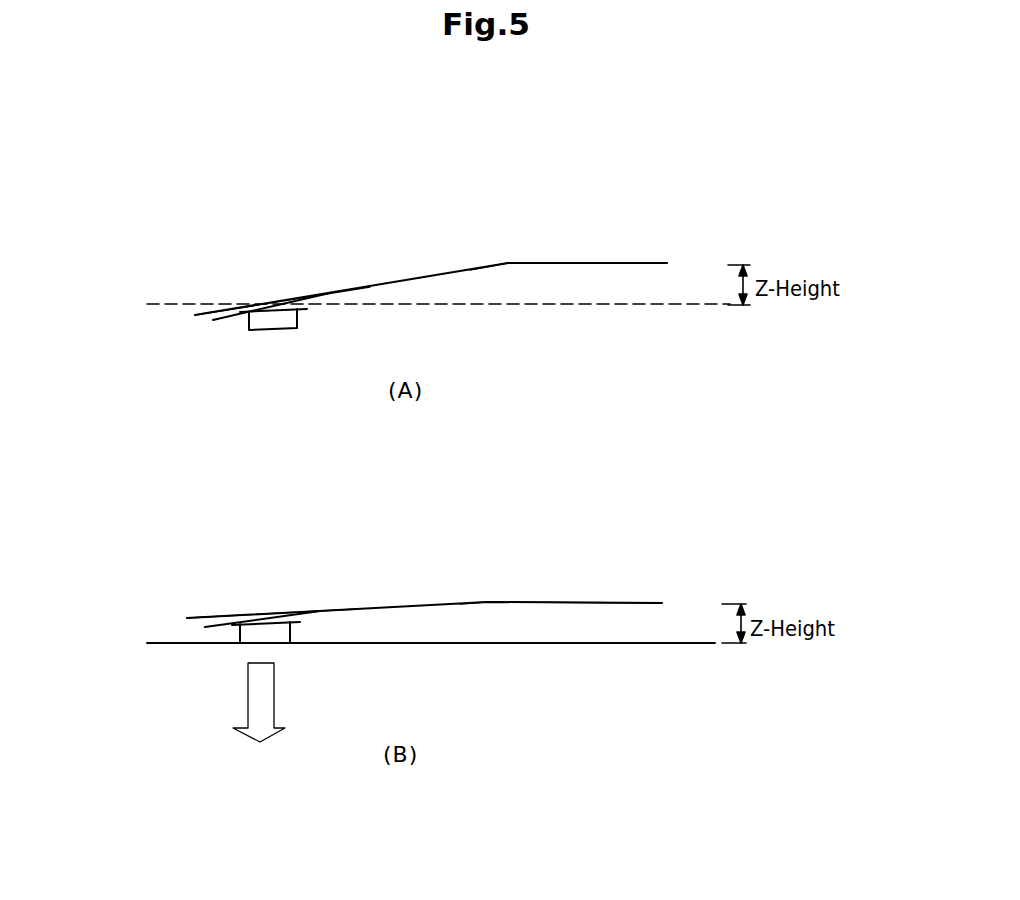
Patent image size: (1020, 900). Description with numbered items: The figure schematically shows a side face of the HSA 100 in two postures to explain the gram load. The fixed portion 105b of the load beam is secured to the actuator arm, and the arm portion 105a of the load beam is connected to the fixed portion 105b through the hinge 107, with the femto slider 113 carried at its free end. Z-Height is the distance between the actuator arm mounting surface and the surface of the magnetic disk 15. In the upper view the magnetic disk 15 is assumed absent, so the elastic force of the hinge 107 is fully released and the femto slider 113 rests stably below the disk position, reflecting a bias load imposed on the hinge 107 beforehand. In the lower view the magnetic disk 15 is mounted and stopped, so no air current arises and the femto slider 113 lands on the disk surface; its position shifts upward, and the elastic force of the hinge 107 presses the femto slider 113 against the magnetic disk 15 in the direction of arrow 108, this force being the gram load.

The HSA 100 is at (389, 186).
The arm portion of the load beam 105a is at (370, 287).
The fixed portion of the load beam 105b is at (643, 262).
The hinge 107 is at (510, 262).
The femto slider 113 is at (248, 331).
The magnetic disk 15 is at (540, 304).
The arrow 108 is at (272, 740).